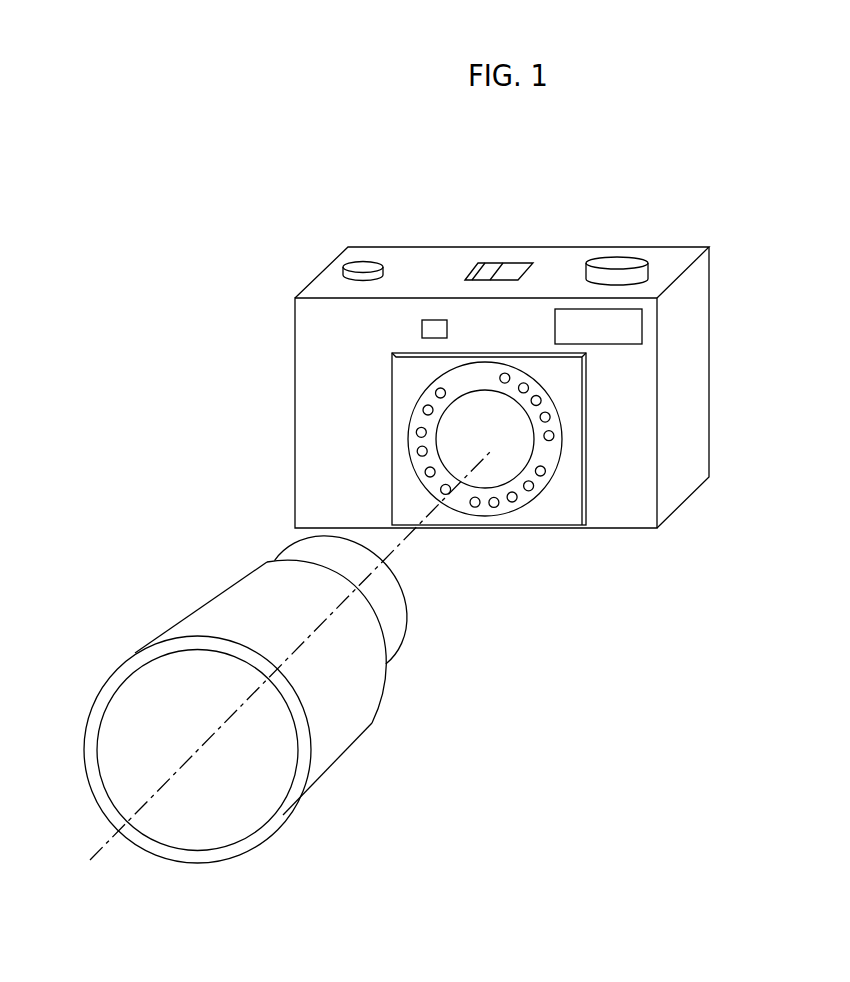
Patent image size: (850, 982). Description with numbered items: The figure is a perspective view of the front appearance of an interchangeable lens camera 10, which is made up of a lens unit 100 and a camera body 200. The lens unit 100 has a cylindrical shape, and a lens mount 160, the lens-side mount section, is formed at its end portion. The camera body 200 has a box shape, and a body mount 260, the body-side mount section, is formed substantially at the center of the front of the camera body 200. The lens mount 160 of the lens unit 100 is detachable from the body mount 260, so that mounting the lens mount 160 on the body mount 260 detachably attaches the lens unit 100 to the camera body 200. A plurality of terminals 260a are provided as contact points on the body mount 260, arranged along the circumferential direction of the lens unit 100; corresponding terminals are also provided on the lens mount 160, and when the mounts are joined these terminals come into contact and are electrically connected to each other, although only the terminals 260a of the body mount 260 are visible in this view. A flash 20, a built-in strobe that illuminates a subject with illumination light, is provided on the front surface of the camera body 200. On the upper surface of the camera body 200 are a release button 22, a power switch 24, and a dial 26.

The camera 10 is at (774, 262).
The flash 20 is at (640, 325).
The release button 22 is at (360, 268).
The power switch 24 is at (497, 272).
The dial 26 is at (619, 264).
The lens unit 100 is at (350, 712).
The lens mount 160 is at (388, 636).
The camera body 200 is at (627, 508).
The body mount 260 is at (515, 519).
The terminals 260a is at (475, 507).